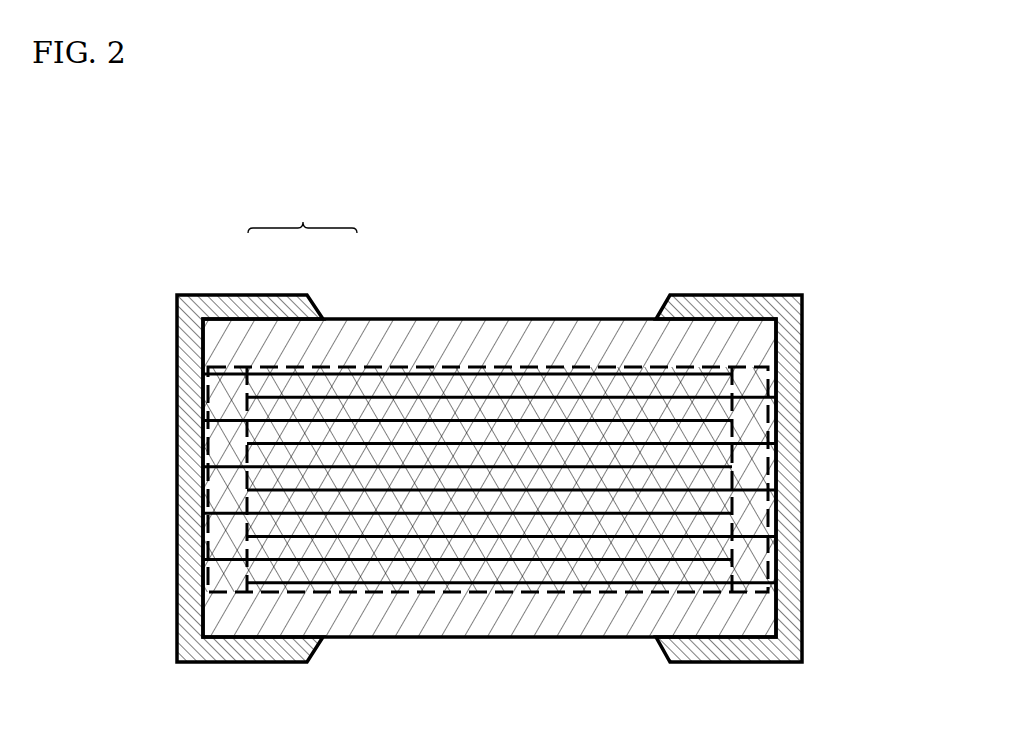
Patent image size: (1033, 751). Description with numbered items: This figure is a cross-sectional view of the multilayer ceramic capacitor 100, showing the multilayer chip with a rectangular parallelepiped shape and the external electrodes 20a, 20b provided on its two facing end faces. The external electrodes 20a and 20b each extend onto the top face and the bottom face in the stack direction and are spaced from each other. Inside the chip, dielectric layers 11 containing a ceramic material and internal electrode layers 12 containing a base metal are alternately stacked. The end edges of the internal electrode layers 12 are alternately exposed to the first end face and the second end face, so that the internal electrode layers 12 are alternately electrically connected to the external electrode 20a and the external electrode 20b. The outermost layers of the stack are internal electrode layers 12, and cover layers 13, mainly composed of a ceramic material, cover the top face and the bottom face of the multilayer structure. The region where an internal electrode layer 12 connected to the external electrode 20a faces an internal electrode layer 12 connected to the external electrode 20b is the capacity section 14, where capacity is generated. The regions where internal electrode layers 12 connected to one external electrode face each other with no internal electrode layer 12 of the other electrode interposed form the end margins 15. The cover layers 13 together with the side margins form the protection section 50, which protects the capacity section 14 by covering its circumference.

The multilayer ceramic capacitor 100 is at (482, 427).
The external electrode 20a is at (200, 297).
The external electrode 20b is at (765, 295).
The protection section 50 is at (302, 208).
The end margin 15 is at (225, 367).
The cover layer 13 is at (346, 347).
The capacity section 14 is at (497, 367).
The internal electrode layer 12 is at (470, 515).
The dielectric layer 11 is at (605, 547).